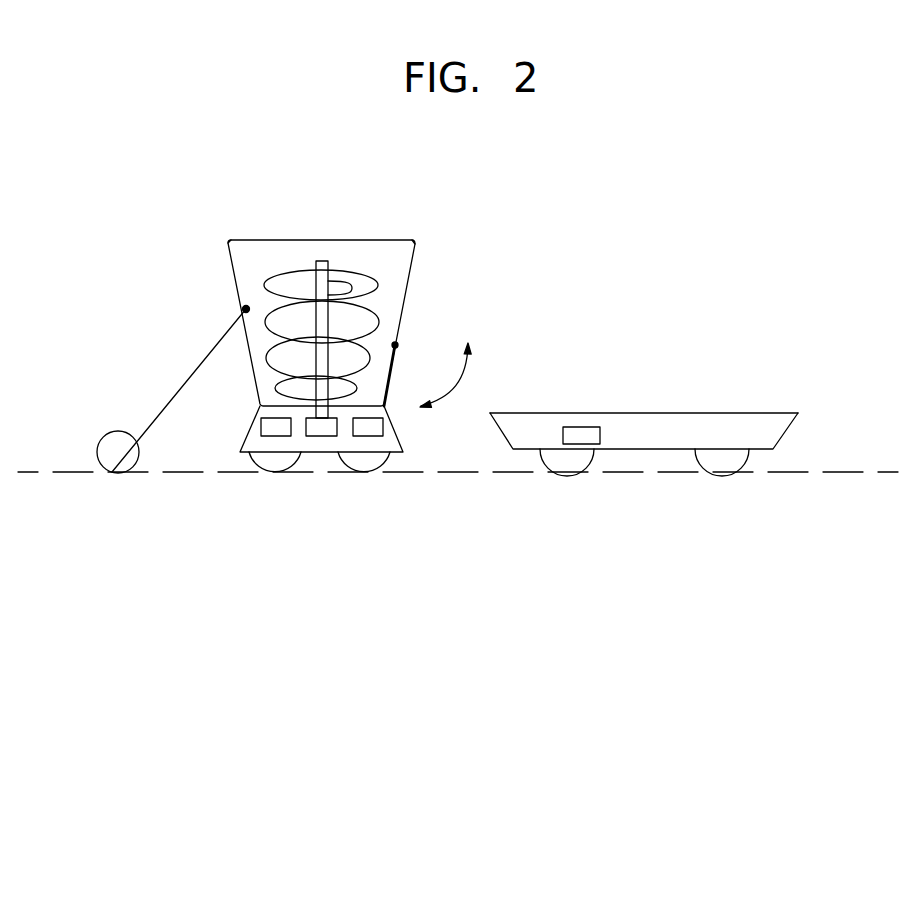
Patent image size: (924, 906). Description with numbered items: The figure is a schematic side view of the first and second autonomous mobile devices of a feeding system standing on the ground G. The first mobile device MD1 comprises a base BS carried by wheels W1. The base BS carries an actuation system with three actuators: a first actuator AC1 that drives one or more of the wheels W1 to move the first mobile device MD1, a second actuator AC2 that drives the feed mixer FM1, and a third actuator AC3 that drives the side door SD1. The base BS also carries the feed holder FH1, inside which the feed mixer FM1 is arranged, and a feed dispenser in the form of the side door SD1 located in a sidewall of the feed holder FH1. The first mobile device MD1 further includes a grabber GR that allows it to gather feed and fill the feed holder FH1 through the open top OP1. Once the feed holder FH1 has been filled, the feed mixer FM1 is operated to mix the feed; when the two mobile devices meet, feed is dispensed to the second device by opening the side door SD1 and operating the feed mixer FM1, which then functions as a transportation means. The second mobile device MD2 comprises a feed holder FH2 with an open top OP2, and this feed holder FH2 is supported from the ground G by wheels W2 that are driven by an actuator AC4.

The first mobile device MD1 is at (150, 253).
The feed mixer FM1 is at (292, 277).
The open top OP1 is at (387, 235).
The feed holder FH1 is at (410, 277).
The side door SD1 is at (392, 372).
The grabber GR is at (108, 439).
The first actuator AC1 is at (277, 427).
The second actuator AC2 is at (320, 426).
The third actuator AC3 is at (367, 425).
The wheels W1 is at (280, 460).
The base BS is at (314, 443).
The second mobile device MD2 is at (797, 368).
The open top OP2 is at (611, 410).
The feed holder FH2 is at (785, 432).
The actuator AC4 is at (588, 435).
The wheels W2 is at (567, 466).
The ground G is at (840, 472).